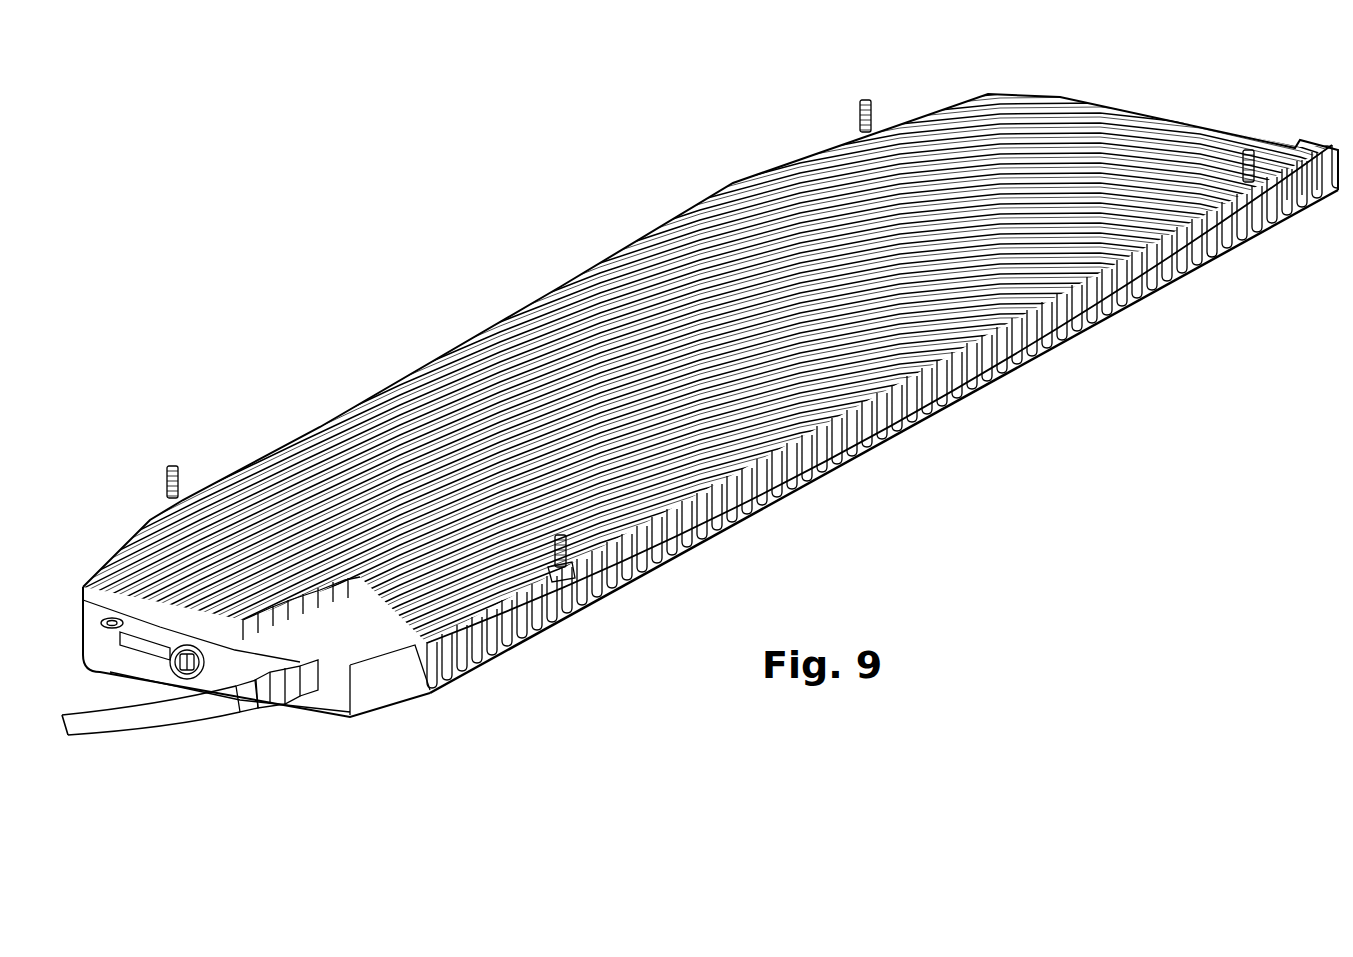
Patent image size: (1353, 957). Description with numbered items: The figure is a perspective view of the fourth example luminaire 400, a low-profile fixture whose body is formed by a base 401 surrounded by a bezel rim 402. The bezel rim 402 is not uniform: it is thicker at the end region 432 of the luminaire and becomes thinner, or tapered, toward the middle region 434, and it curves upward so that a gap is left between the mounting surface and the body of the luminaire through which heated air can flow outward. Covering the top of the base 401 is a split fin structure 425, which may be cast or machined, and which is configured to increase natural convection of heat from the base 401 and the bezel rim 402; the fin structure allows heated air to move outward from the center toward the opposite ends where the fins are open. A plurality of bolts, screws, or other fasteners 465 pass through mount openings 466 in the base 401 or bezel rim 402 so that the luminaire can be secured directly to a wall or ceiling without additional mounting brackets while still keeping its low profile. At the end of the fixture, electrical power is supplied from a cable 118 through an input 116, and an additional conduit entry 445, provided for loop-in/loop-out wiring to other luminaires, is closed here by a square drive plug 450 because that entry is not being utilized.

The fourth example luminaire 400 is at (485, 213).
The base 401 is at (445, 522).
The bezel rim 402 is at (400, 690).
The split fin structure 425 is at (658, 252).
The end region 432 is at (1332, 214).
The middle region 434 is at (970, 414).
The additional conduit entry 445 is at (158, 668).
The square drive plug 450 is at (188, 676).
The fasteners 465 is at (860, 102).
The mount openings 466 is at (585, 585).
The input 116 is at (292, 722).
The cable 118 is at (100, 742).